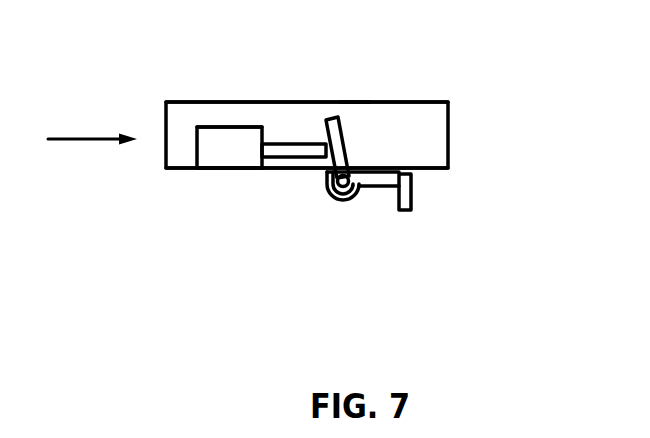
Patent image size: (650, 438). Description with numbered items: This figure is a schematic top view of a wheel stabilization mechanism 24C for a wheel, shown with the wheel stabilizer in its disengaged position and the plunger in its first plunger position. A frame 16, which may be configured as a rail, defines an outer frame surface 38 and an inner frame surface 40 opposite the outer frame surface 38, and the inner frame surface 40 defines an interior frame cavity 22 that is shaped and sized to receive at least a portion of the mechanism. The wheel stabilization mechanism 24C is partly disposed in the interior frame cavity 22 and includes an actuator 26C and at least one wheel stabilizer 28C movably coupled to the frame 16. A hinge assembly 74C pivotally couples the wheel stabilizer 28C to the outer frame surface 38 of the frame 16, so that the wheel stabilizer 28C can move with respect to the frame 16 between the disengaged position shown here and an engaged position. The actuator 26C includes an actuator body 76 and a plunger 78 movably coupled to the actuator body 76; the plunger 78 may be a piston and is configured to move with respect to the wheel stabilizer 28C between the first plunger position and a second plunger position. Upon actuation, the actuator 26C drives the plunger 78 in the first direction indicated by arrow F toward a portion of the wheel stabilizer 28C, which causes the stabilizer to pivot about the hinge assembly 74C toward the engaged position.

The first direction arrow F is at (73, 139).
The frame 16 is at (405, 102).
The interior frame cavity 22 is at (297, 96).
The wheel stabilization mechanism 24C is at (202, 126).
The actuator 26C is at (205, 168).
The wheel stabilizer 28C is at (348, 150).
The outer frame surface 38 is at (430, 170).
The inner frame surface 40 is at (350, 102).
The hinge assembly 74C is at (328, 183).
The actuator body 76 is at (225, 126).
The plunger 78 is at (275, 144).